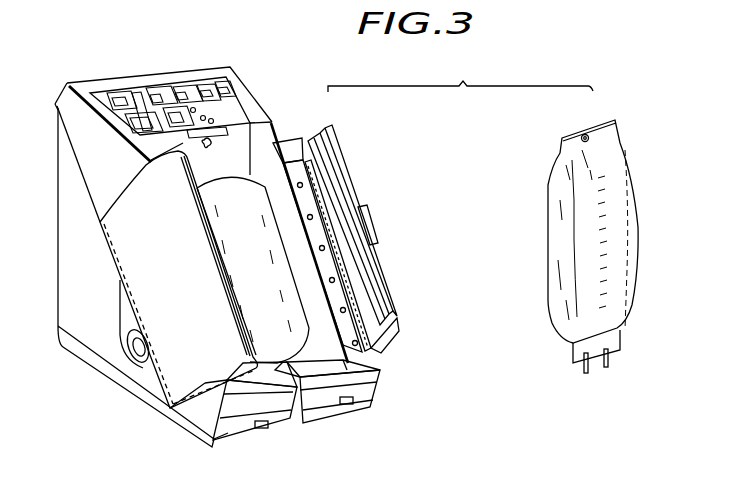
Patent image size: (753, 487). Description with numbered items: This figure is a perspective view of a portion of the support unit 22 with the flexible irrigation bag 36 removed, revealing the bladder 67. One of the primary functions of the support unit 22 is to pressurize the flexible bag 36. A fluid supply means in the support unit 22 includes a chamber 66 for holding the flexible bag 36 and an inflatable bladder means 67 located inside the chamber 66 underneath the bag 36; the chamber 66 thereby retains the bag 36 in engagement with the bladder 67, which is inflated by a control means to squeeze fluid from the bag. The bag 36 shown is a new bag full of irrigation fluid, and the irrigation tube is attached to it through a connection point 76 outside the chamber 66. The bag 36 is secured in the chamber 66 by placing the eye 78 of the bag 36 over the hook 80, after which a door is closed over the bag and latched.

The support unit 22 is at (216, 63).
The hook 80 is at (212, 146).
The chamber 66 is at (243, 155).
The inflatable bladder means 67 is at (281, 301).
The eye 78 is at (582, 134).
The flexible bag 36 is at (555, 241).
The connection point 76 is at (613, 357).